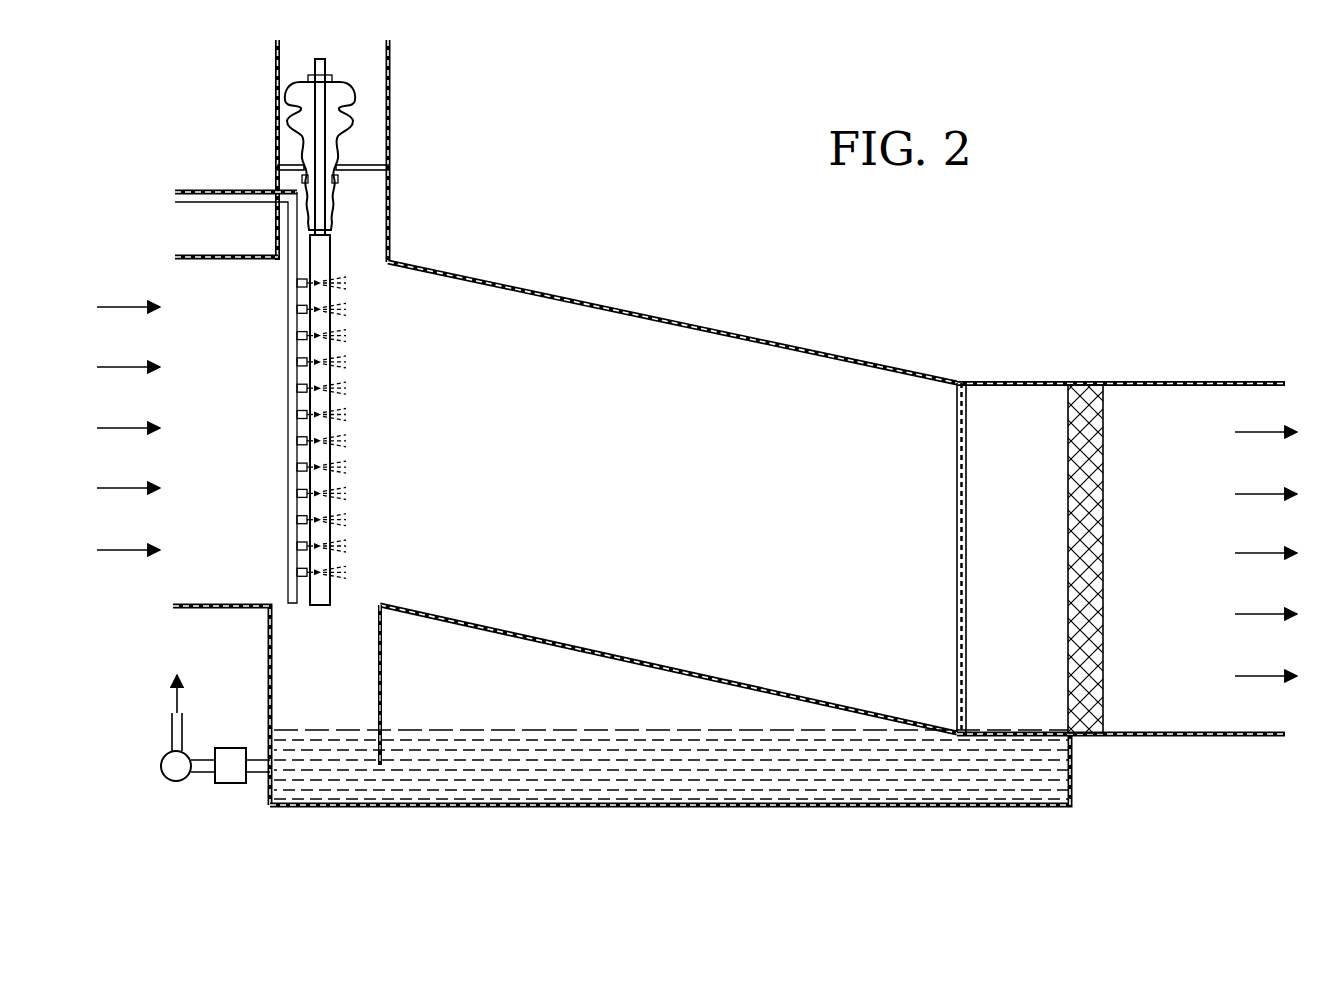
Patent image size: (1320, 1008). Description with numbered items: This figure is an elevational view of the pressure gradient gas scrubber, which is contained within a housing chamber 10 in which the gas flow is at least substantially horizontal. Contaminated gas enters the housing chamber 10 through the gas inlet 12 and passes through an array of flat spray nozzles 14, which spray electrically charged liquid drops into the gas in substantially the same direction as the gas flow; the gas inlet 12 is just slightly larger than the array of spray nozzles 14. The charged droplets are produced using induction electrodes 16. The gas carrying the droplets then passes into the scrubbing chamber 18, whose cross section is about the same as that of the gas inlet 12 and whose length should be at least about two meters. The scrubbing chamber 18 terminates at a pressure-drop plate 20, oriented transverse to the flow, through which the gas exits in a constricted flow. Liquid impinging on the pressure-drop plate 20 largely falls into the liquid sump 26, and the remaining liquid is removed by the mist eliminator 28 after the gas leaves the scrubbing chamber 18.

The housing chamber 10 is at (824, 348).
The gas inlet 12 is at (188, 614).
The spray nozzles 14 is at (297, 393).
The induction electrodes 16 is at (322, 257).
The scrubbing chamber 18 is at (393, 262).
The pressure-drop plate 20 is at (970, 450).
The liquid sump 26 is at (948, 780).
The mist eliminator 28 is at (1103, 490).